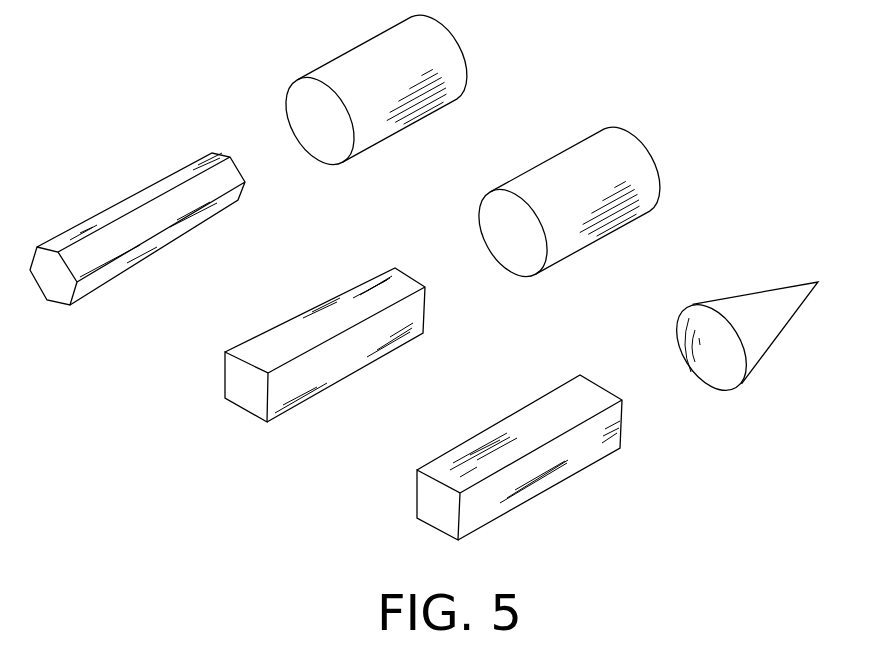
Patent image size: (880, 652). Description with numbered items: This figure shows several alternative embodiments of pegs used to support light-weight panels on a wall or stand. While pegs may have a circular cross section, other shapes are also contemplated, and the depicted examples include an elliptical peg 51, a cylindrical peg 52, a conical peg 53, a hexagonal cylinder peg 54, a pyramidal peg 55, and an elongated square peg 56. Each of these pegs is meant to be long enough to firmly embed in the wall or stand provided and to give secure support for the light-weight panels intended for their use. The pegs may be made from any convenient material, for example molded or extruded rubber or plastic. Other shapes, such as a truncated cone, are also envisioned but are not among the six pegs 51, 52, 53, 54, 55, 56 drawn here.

The elliptical peg 51 is at (400, 80).
The cylindrical peg 52 is at (593, 196).
The conical peg 53 is at (777, 327).
The hexagonal cylinder peg 54 is at (112, 205).
The pyramidal peg 55 is at (308, 307).
The elongated square peg 56 is at (508, 418).